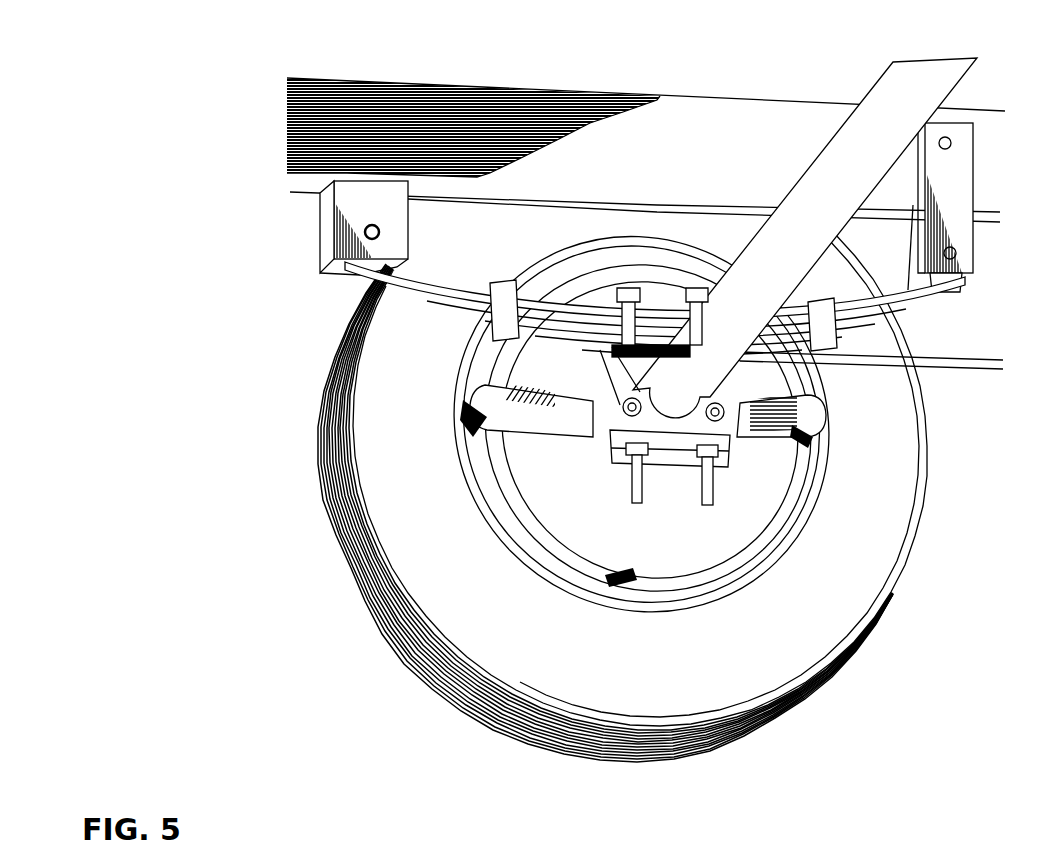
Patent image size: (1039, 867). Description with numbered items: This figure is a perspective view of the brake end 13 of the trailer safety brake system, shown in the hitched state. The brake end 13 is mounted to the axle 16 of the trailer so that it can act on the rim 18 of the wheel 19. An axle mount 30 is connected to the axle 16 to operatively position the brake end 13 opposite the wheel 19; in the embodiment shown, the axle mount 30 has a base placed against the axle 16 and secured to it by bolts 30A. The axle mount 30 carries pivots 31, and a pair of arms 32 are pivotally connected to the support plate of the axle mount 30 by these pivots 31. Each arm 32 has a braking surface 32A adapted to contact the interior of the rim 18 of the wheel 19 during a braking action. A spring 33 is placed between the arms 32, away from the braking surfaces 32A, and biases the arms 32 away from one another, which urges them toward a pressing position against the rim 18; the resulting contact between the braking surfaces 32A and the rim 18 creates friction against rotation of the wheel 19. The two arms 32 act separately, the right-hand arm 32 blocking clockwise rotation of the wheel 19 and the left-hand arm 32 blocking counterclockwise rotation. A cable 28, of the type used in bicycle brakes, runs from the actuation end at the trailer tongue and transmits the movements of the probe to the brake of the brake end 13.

The brake end 13 is at (272, 564).
The axle 16 is at (880, 87).
The rim 18 is at (802, 505).
The wheel 19 is at (897, 474).
The cable 28 is at (845, 325).
The axle mount 30 is at (690, 468).
The bolts 30A is at (639, 505).
The pivots 31 is at (712, 404).
The arms 32 is at (556, 424).
The braking surfaces 32A is at (463, 427).
The spring 33 is at (655, 350).